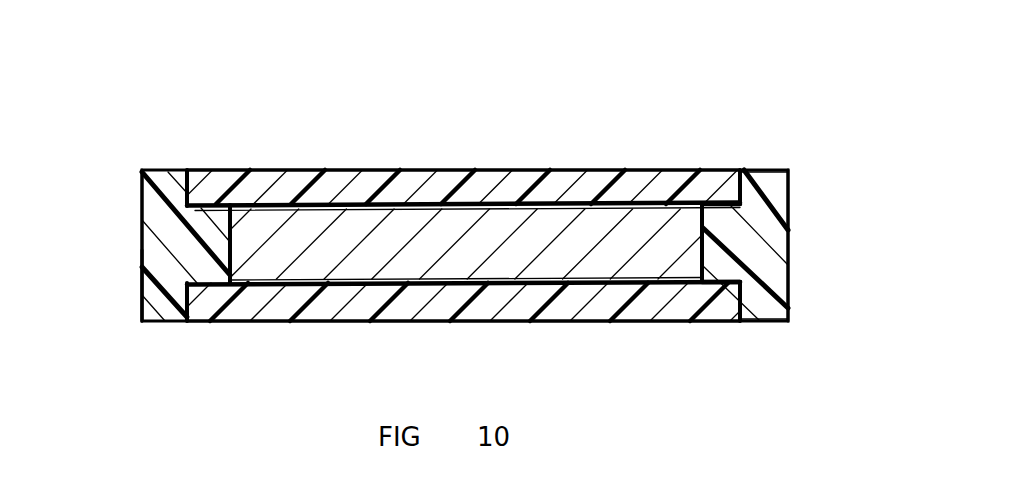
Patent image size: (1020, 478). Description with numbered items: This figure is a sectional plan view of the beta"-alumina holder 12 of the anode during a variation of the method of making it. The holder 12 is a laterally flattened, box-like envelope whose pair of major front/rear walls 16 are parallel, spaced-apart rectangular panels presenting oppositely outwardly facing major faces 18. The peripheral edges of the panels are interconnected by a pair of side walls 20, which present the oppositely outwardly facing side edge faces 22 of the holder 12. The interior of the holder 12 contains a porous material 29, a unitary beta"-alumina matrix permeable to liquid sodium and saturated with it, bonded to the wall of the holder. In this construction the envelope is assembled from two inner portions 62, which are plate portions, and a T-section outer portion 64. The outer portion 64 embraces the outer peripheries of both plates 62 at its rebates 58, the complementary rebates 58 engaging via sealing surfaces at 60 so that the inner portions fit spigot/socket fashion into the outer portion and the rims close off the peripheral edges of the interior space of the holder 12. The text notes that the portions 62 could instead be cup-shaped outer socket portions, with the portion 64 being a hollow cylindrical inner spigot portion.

The holder 12 is at (730, 116).
The major front/rear walls 16 is at (431, 170).
The major faces 18 is at (574, 156).
The side walls 20 is at (160, 228).
The side edge faces 22 is at (130, 189).
The porous material 29 is at (303, 263).
The rebates 58 is at (784, 193).
The sealing surfaces 60 is at (726, 182).
The inner portions 62 is at (372, 132).
The T-section outer portion 64 is at (126, 283).